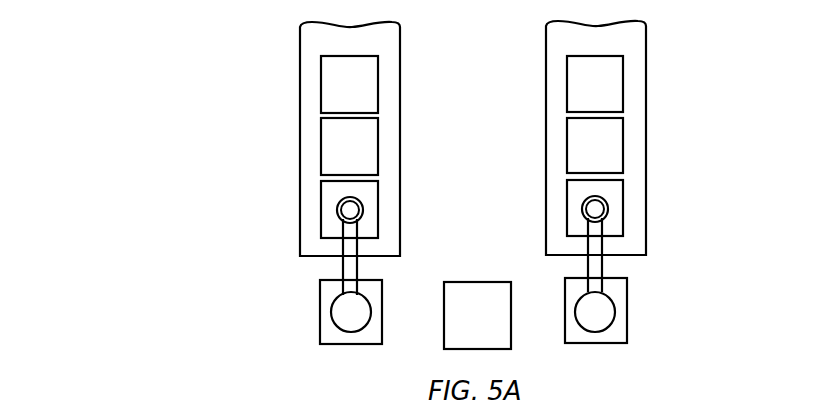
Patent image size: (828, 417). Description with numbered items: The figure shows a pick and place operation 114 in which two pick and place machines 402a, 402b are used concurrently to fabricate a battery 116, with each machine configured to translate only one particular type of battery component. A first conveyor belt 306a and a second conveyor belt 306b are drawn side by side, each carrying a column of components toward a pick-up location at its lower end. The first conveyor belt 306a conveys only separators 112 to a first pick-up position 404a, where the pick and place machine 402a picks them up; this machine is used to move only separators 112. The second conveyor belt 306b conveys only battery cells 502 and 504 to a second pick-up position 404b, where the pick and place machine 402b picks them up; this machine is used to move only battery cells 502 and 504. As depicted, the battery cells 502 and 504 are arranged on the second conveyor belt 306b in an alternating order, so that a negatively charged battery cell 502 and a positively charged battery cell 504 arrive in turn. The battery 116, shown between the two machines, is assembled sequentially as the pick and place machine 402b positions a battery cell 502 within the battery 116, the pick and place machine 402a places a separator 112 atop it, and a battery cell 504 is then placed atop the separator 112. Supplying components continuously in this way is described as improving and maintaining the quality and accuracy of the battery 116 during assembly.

The pick and place operation 114 is at (90, 44).
The first conveyor belt 306a is at (300, 41).
The second conveyor belt 306b is at (646, 33).
The separator 112 is at (268, 218).
The first pick-up position 404a is at (345, 203).
The second pick-up position 404b is at (606, 212).
The pick and place machine 402a is at (321, 322).
The pick and place machine 402b is at (627, 327).
The battery 116 is at (444, 341).
The battery cell 502 is at (675, 180).
The battery cell 504 is at (595, 145).